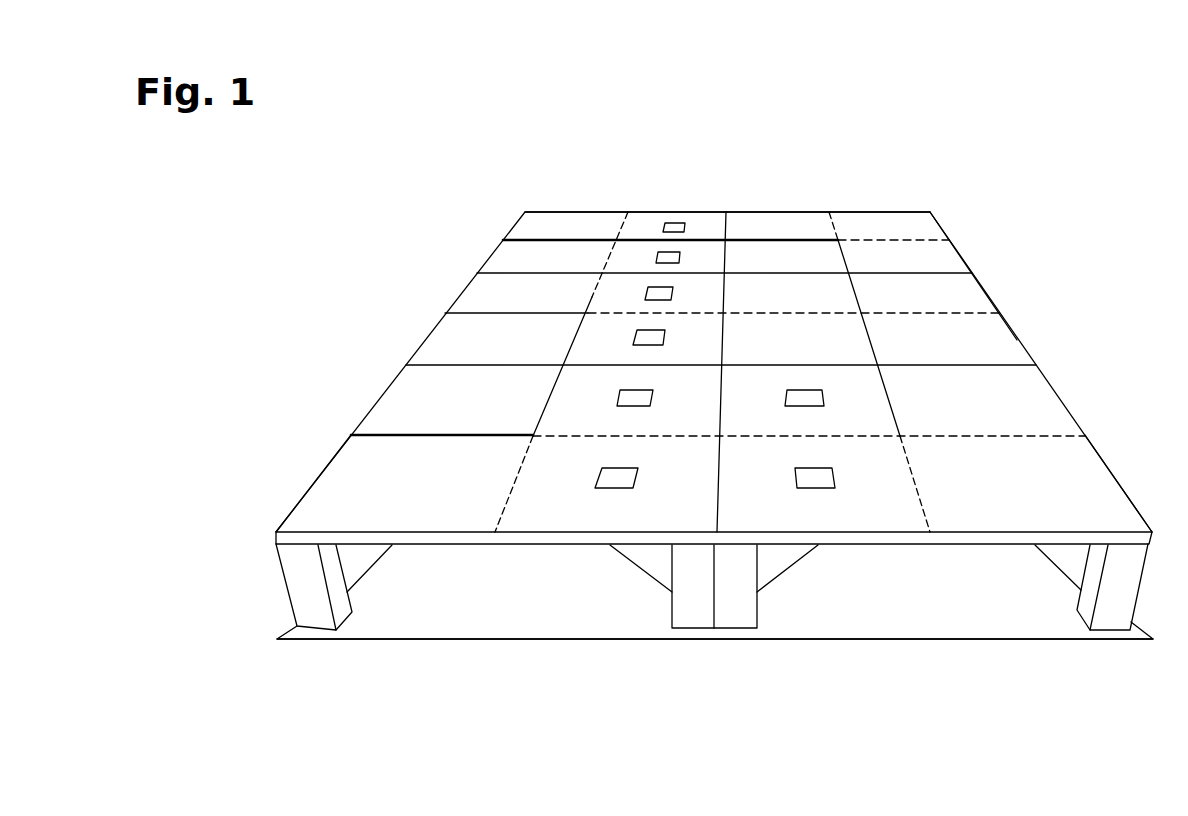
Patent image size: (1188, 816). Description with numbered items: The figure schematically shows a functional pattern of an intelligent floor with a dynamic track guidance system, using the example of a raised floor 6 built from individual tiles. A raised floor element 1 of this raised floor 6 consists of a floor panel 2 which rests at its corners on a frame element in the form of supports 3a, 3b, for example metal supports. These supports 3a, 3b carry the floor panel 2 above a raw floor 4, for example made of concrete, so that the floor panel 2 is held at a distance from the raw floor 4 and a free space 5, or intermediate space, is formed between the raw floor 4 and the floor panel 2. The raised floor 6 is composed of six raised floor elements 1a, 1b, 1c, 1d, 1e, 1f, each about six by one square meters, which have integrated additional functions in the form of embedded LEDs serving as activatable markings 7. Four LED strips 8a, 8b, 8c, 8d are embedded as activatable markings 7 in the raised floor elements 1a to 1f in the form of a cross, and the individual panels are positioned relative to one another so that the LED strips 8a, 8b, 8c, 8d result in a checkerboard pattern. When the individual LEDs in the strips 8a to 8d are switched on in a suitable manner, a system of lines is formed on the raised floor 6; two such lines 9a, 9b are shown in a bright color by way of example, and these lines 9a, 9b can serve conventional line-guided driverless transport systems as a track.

The raised floor element 1 is at (710, 435).
The raised floor element 1a is at (343, 485).
The raised floor element 1b is at (465, 342).
The raised floor element 1c is at (592, 222).
The raised floor element 1d is at (862, 222).
The raised floor element 1e is at (970, 292).
The raised floor element 1f is at (1095, 472).
The floor panel 2 is at (928, 620).
The support 3a is at (735, 620).
The support 3b is at (1108, 625).
The raw floor 4 is at (1003, 657).
The free space 5 is at (411, 602).
The raised floor 6 is at (958, 212).
The activatable markings 7 is at (573, 440).
The LED strip 8a is at (530, 483).
The LED strip 8b is at (663, 440).
The LED strip 8c is at (845, 440).
The LED strip 8d is at (593, 295).
The line 9a is at (395, 435).
The line 9b is at (518, 238).